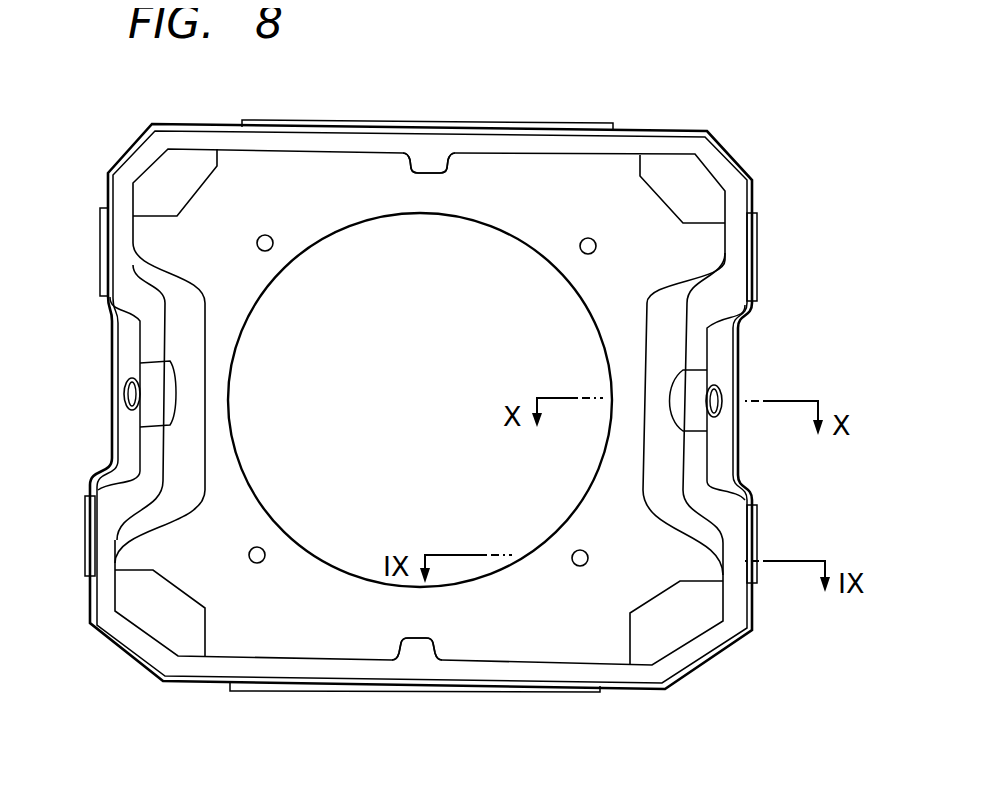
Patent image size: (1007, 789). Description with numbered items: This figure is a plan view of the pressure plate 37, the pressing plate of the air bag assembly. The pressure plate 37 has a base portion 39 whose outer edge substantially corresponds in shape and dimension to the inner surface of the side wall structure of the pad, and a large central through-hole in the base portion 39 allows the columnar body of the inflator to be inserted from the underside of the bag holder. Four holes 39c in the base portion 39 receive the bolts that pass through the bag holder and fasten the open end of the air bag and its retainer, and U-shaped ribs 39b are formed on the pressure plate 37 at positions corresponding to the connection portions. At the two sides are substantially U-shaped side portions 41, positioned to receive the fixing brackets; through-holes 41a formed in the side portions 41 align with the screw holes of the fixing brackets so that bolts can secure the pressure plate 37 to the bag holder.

The pressure plate 37 is at (762, 166).
The base portion 39 is at (232, 180).
The U-shaped ribs 39b is at (429, 168).
The holes 39c is at (272, 233).
The side portions 41 is at (728, 617).
The through-holes 41a is at (128, 392).